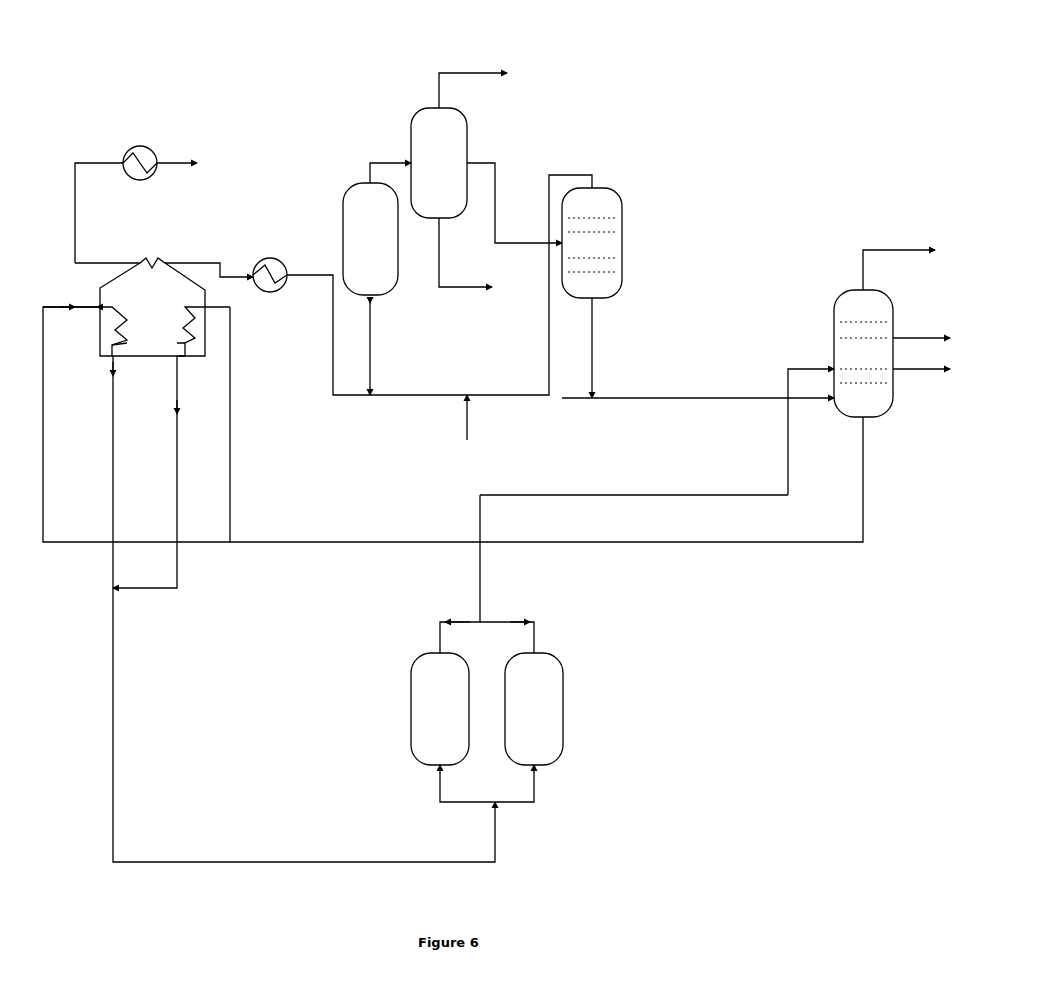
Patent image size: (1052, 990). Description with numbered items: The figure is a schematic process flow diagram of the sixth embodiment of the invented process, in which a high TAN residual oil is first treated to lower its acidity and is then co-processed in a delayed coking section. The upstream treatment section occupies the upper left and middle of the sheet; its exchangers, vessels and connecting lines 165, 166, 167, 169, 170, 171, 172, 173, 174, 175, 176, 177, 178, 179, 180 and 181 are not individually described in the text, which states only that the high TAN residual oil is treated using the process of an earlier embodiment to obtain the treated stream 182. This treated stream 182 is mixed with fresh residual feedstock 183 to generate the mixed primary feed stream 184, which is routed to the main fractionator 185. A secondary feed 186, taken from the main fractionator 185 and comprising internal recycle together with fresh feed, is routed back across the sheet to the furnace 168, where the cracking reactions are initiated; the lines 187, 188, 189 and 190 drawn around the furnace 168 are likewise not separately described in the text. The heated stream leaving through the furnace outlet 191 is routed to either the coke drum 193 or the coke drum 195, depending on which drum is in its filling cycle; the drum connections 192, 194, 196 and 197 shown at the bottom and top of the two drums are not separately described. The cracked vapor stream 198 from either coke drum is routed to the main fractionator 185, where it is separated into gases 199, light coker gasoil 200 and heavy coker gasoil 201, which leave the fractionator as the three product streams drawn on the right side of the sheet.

The outlet line 165 is at (195, 162).
The heat exchanger 166 is at (138, 146).
The recycle line 167 is at (74, 212).
The furnace 168 is at (100, 287).
The reactor effluent line 169 is at (207, 262).
The heat exchanger 170 is at (270, 258).
The line 171 is at (348, 397).
The line 172 is at (369, 334).
The separator 173 is at (345, 207).
The line 174 is at (385, 162).
The separator 175 is at (424, 107).
The gas outlet line 176 is at (480, 72).
The outlet line 177 is at (470, 288).
The line 178 is at (537, 242).
The column 179 is at (614, 297).
The line 180 is at (530, 397).
The feed line 181 is at (470, 428).
The treated stream 182 is at (594, 336).
The fresh residual feedstock 183 is at (582, 397).
The mixed primary feed stream 184 is at (826, 400).
The main fractionator 185 is at (836, 320).
The secondary feed 186 is at (585, 545).
The line 187 is at (44, 447).
The line 188 is at (232, 447).
The line 189 is at (115, 405).
The line 190 is at (178, 473).
The furnace outlet 191 is at (160, 863).
The line 192 is at (439, 792).
The coke drum 193 is at (412, 683).
The line 194 is at (536, 792).
The coke drum 195 is at (562, 715).
The line 196 is at (438, 630).
The line 197 is at (536, 625).
The cracked vapor stream 198 is at (652, 497).
The gases 199 is at (898, 248).
The light coker gasoil 200 is at (924, 337).
The heavy coker gasoil 201 is at (930, 370).